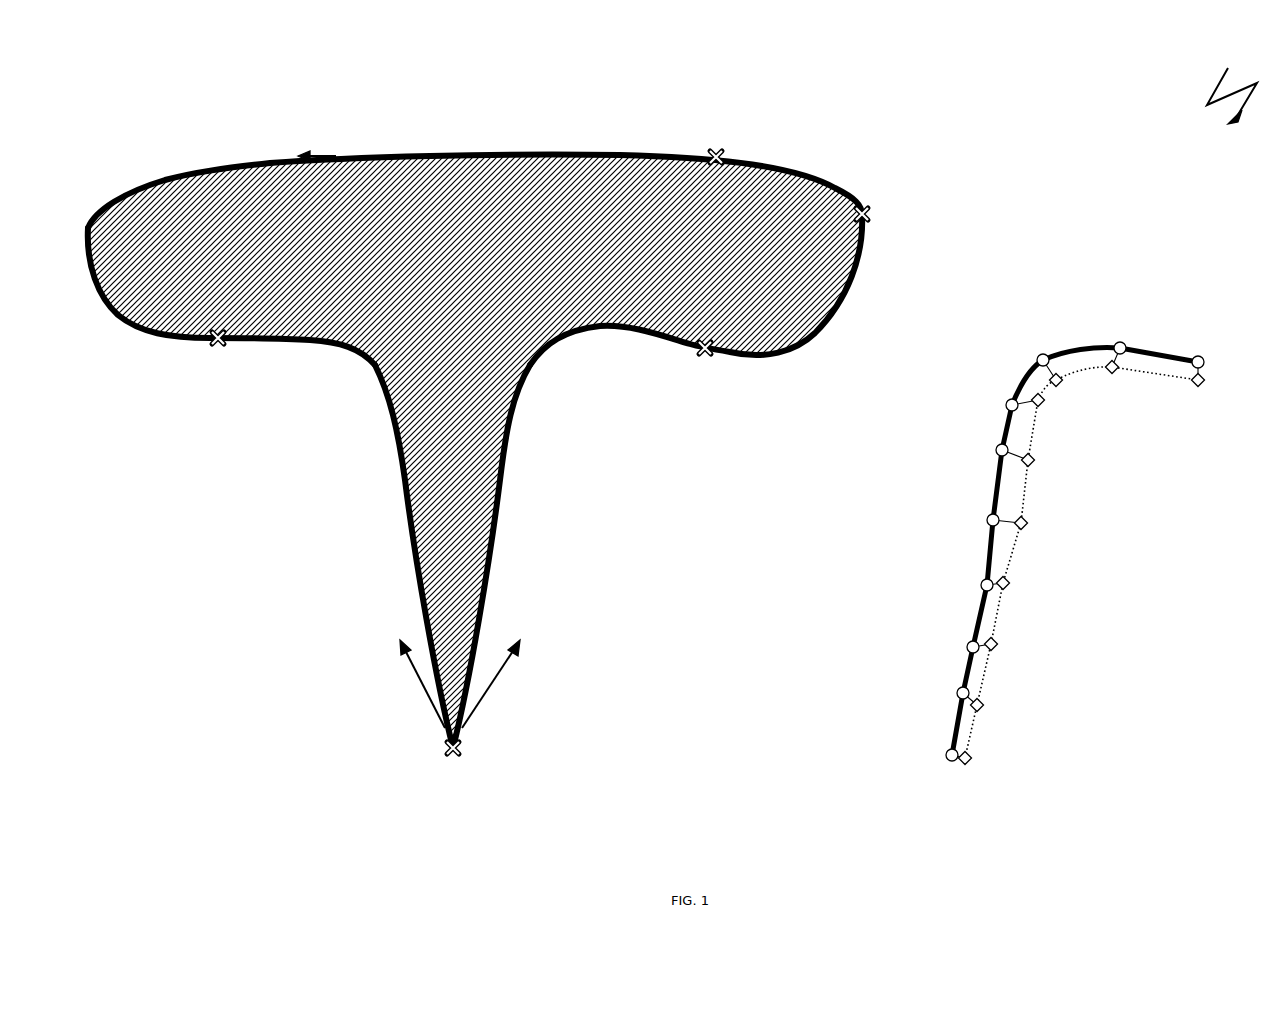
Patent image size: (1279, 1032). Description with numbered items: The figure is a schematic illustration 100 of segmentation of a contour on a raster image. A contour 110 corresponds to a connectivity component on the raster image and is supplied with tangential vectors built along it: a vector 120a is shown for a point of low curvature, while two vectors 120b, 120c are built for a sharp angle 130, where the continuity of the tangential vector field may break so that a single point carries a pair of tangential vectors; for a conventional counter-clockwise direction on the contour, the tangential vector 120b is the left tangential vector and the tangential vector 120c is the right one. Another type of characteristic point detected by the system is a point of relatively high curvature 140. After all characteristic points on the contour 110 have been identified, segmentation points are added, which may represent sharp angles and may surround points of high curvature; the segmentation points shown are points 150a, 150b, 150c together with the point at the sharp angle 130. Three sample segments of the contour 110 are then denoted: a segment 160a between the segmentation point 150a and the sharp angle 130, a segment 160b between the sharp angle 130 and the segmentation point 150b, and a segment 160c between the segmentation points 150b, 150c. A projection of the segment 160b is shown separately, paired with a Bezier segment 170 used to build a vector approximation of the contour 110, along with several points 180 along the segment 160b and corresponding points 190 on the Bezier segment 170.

The schematic illustration 100 is at (1232, 82).
The contour 110 is at (183, 163).
The tangential vector 120a is at (362, 152).
The left tangential vector 120b is at (405, 660).
The right tangential vector 120c is at (525, 660).
The sharp angle 130 is at (452, 760).
The point of relatively high curvature 140 is at (868, 202).
The segmentation point 150a is at (212, 357).
The segmentation point 150b is at (698, 360).
The segmentation point 150c is at (718, 148).
The segment 160a is at (400, 498).
The segment 160b is at (518, 498).
The segment 160c is at (868, 262).
The Bezier segment 170 is at (1035, 490).
The points along the segment 180 is at (1003, 408).
The corresponding points on the Bezier segment 190 is at (1040, 405).